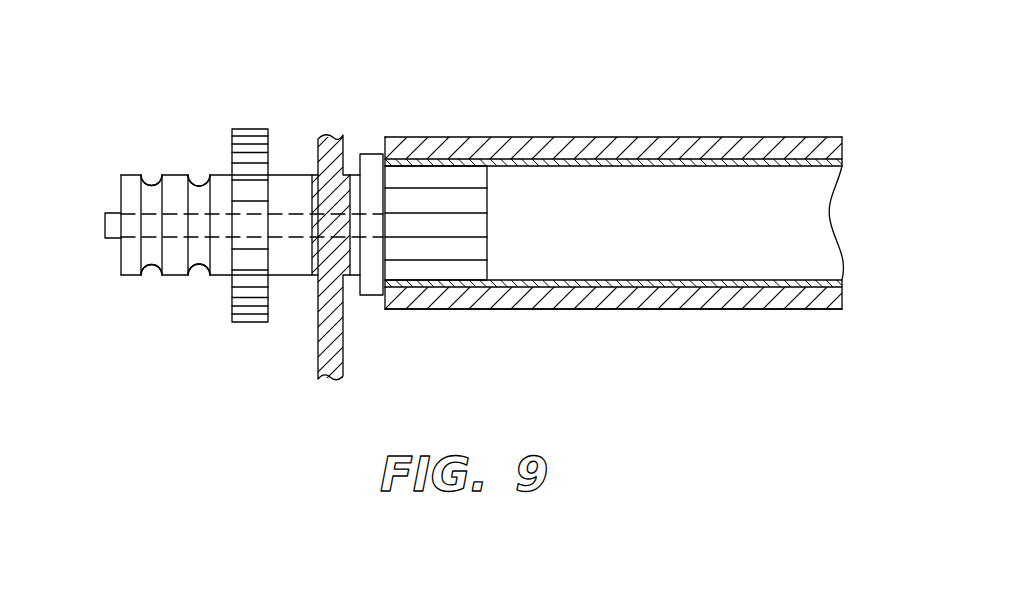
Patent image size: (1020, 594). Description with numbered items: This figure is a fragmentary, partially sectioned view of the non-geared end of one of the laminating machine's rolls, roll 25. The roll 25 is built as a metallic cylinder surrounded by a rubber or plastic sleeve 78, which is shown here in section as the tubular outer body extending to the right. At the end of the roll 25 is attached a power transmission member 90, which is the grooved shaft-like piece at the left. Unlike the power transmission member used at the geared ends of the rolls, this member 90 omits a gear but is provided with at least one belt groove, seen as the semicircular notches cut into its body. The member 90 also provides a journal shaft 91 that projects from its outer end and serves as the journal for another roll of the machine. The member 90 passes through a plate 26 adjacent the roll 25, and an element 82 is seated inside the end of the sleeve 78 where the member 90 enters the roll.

The roll 25 is at (633, 330).
The mounting plate 26 is at (333, 140).
The rubber or plastic sleeve 78 is at (617, 137).
The insert / bearing block 82 is at (428, 180).
The power transmission member 90 is at (132, 175).
The journal shaft 91 is at (105, 227).